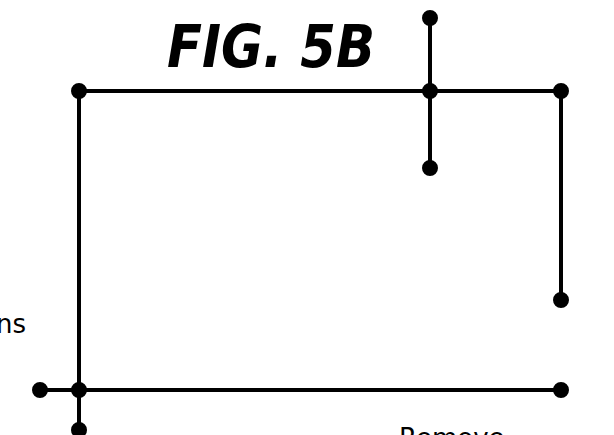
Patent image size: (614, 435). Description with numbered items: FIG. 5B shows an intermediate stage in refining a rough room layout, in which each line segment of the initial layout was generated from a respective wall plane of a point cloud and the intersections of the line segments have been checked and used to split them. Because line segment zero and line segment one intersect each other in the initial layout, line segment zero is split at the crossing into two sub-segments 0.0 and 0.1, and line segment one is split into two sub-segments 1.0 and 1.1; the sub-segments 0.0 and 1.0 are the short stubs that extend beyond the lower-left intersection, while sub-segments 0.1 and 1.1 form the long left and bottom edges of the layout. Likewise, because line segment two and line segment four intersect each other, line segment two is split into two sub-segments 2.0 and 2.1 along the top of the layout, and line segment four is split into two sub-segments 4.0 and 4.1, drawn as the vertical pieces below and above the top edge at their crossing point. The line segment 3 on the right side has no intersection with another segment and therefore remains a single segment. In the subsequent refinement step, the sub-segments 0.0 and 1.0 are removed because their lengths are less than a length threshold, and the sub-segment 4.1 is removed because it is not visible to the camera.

The sub-segment 0.0 is at (101, 409).
The sub-segment 0.1 is at (97, 237).
The sub-segment 1.0 is at (53, 374).
The sub-segment 1.1 is at (323, 373).
The sub-segment 2.0 is at (257, 105).
The sub-segment 2.1 is at (498, 105).
The line segment 3 is at (570, 198).
The sub-segment 4.0 is at (454, 132).
The sub-segment 4.1 is at (454, 51).